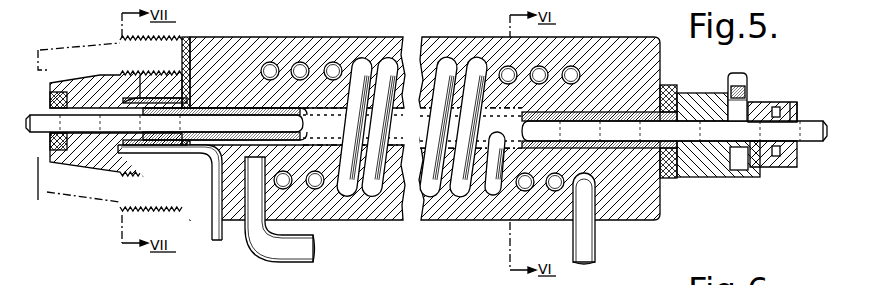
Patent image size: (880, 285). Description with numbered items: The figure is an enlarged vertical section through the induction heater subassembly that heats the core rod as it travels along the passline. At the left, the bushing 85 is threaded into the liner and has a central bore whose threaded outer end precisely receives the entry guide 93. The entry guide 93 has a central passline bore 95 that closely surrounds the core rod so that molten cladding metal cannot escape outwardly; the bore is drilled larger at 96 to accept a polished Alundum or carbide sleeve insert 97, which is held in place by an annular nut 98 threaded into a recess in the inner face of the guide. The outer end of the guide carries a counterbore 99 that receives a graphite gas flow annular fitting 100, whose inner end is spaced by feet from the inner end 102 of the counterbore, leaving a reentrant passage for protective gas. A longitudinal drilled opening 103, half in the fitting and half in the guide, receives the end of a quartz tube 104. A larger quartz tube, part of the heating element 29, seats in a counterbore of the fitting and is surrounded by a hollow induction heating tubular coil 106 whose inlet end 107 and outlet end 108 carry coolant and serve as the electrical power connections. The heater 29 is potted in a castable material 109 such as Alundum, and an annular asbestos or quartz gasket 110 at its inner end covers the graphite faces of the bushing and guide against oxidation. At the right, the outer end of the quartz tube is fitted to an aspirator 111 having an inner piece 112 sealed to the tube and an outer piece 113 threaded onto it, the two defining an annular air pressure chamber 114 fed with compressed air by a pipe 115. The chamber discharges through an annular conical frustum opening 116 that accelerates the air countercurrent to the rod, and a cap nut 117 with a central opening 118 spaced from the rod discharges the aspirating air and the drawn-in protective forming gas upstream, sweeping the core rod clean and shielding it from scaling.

The heating element 29 is at (378, 42).
The bushing 85 is at (100, 25).
The entry guide 93 is at (50, 160).
The central passline bore 95 is at (108, 102).
The enlarged bore portion 96 is at (83, 135).
The sleeve insert 97 is at (97, 135).
The annular nut 98 is at (62, 80).
The counterbore 99 is at (160, 97).
The gas flow annular fitting 100 is at (205, 42).
The inner end of counterbore 102 is at (121, 108).
The drilled opening 103 is at (140, 153).
The quartz tube 104 is at (185, 205).
The induction heating tubular coil 106 is at (433, 195).
The inlet end 107 is at (275, 250).
The outlet end 108 is at (597, 250).
The castable material 109 is at (343, 47).
The annular gasket 110 is at (193, 37).
The aspirator 111 is at (712, 177).
The inner piece 112 is at (692, 110).
The outer piece 113 is at (712, 97).
The annular air pressure chamber 114 is at (738, 171).
The pipe 115 is at (748, 80).
The annular conical frustum opening 116 is at (760, 101).
The cap nut 117 is at (803, 108).
The central opening 118 is at (803, 160).